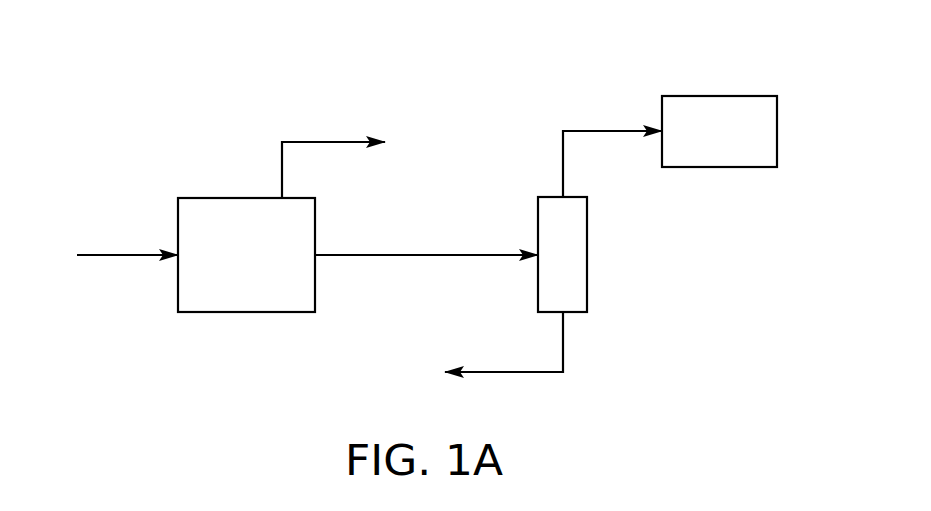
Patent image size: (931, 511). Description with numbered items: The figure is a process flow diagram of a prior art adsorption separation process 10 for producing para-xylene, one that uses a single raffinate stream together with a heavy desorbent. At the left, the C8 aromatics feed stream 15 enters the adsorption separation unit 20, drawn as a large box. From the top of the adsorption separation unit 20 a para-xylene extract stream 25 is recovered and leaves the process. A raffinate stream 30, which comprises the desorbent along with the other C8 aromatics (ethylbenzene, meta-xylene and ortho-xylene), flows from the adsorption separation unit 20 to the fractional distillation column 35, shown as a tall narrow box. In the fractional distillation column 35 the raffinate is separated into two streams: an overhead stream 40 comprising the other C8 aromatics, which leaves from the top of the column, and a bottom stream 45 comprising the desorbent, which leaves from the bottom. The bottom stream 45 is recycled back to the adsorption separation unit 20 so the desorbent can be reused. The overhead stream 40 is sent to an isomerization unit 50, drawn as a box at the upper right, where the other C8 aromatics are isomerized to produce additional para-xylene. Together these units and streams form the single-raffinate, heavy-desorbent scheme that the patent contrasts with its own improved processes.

The adsorption separation process 10 is at (112, 58).
The C8 aromatics feed stream 15 is at (123, 254).
The adsorption separation unit 20 is at (208, 198).
The para-xylene extract stream 25 is at (319, 141).
The raffinate stream 30 is at (411, 254).
The fractional distillation column 35 is at (587, 252).
The overhead stream 40 is at (600, 130).
The bottom stream 45 is at (515, 373).
The isomerization unit 50 is at (720, 95).